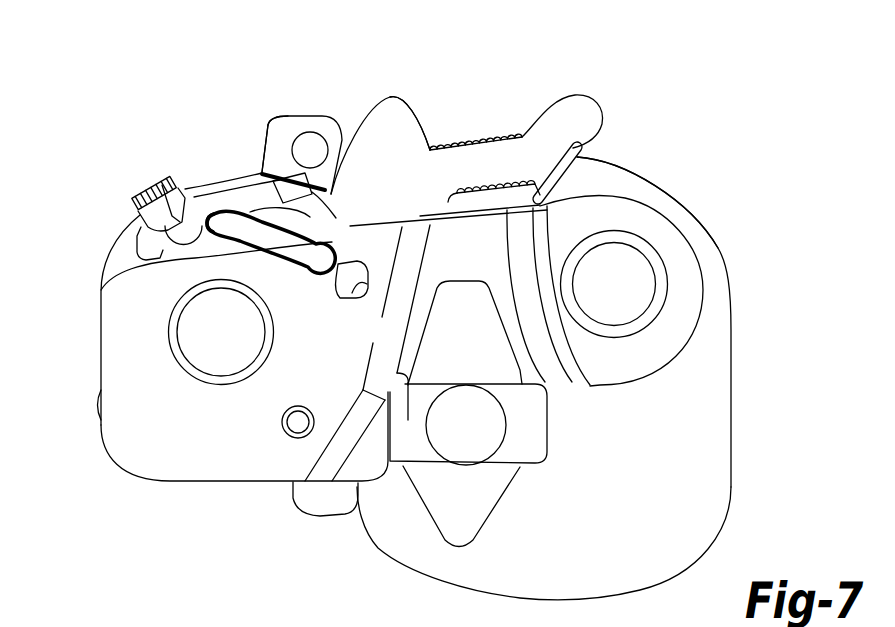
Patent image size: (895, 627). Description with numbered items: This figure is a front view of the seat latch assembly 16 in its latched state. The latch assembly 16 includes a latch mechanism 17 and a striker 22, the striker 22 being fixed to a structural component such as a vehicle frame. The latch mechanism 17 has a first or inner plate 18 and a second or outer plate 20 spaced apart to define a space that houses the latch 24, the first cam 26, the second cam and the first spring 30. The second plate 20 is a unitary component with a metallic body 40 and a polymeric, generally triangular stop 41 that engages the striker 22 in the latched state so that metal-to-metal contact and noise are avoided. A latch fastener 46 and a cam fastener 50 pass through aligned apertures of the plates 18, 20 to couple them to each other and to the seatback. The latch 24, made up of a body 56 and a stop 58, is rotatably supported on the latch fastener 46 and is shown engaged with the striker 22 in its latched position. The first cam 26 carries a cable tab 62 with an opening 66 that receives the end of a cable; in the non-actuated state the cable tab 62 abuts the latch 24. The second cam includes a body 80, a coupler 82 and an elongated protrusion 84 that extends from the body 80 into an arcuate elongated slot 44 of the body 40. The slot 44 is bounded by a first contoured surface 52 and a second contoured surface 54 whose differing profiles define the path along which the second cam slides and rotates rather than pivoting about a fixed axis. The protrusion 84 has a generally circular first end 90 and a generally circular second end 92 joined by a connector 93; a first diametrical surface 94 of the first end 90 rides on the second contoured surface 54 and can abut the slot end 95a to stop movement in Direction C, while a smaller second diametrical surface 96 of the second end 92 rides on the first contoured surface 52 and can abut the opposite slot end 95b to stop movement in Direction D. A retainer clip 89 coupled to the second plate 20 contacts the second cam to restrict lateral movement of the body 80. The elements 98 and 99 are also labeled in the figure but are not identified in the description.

The seat latch assembly 16 is at (710, 38).
The latch mechanism 17 is at (737, 135).
The first plate 18 is at (763, 218).
The second plate 20 is at (48, 550).
The striker 22 is at (466, 425).
The latch 24 is at (763, 368).
The first cam 26 is at (220, 95).
The first spring 30 is at (490, 70).
The body 40 is at (233, 462).
The stop 41 is at (487, 363).
The elongated slot 44 is at (353, 330).
The latch fastener 46 is at (660, 285).
The cam fastener 50 is at (173, 338).
The first contoured surface 52 is at (163, 183).
The second contoured surface 54 is at (112, 278).
The body 56 is at (707, 493).
The stop 58 is at (462, 530).
The cable tab 62 is at (333, 134).
The opening 66 is at (310, 149).
The body 80 is at (162, 233).
The coupler 82 is at (153, 212).
The elongated protrusion 84 is at (333, 368).
The retainer clip 89 is at (288, 182).
The first end 90 is at (322, 250).
The second end 92 is at (243, 217).
The connector 93 is at (270, 237).
The first diametrical surface 94 is at (357, 250).
The end 95a is at (340, 272).
The end 95b is at (145, 226).
The second diametrical surface 96 is at (212, 238).
The spring rod 98 is at (586, 153).
The hook 99 is at (506, 136).